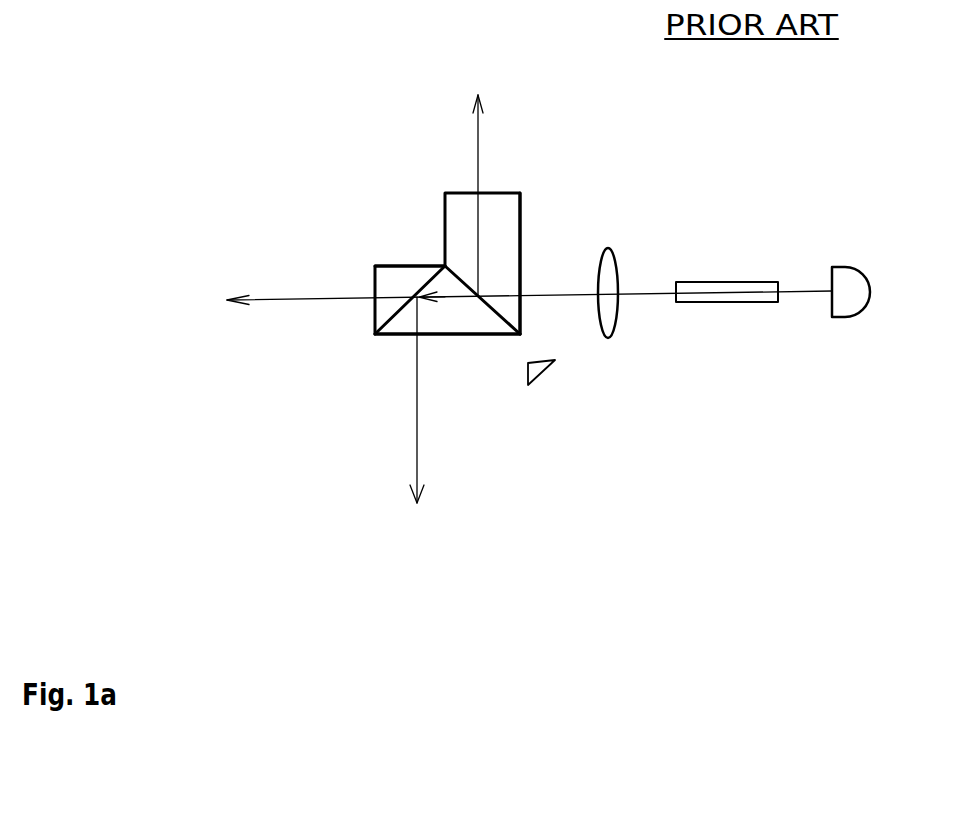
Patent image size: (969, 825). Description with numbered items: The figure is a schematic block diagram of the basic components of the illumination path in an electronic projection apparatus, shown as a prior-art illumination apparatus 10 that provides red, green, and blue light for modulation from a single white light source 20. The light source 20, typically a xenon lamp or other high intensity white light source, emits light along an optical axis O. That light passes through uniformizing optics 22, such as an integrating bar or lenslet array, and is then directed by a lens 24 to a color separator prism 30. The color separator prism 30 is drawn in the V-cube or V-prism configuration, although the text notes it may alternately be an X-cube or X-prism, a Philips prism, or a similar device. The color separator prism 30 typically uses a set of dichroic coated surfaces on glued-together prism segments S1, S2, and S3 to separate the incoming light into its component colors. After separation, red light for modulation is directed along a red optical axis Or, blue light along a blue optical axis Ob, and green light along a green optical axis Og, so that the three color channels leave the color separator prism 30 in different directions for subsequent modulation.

The illumination apparatus 10 is at (689, 497).
The white light source 20 is at (838, 318).
The uniformizing optics 22 is at (730, 303).
The lens 24 is at (608, 248).
The color separator prism 30 is at (540, 372).
The prism segment S1 is at (412, 262).
The prism segment S2 is at (452, 334).
The prism segment S3 is at (508, 190).
The optical axis O is at (645, 290).
The blue optical axis Ob is at (478, 165).
The green optical axis Og is at (278, 297).
The red optical axis Or is at (417, 443).